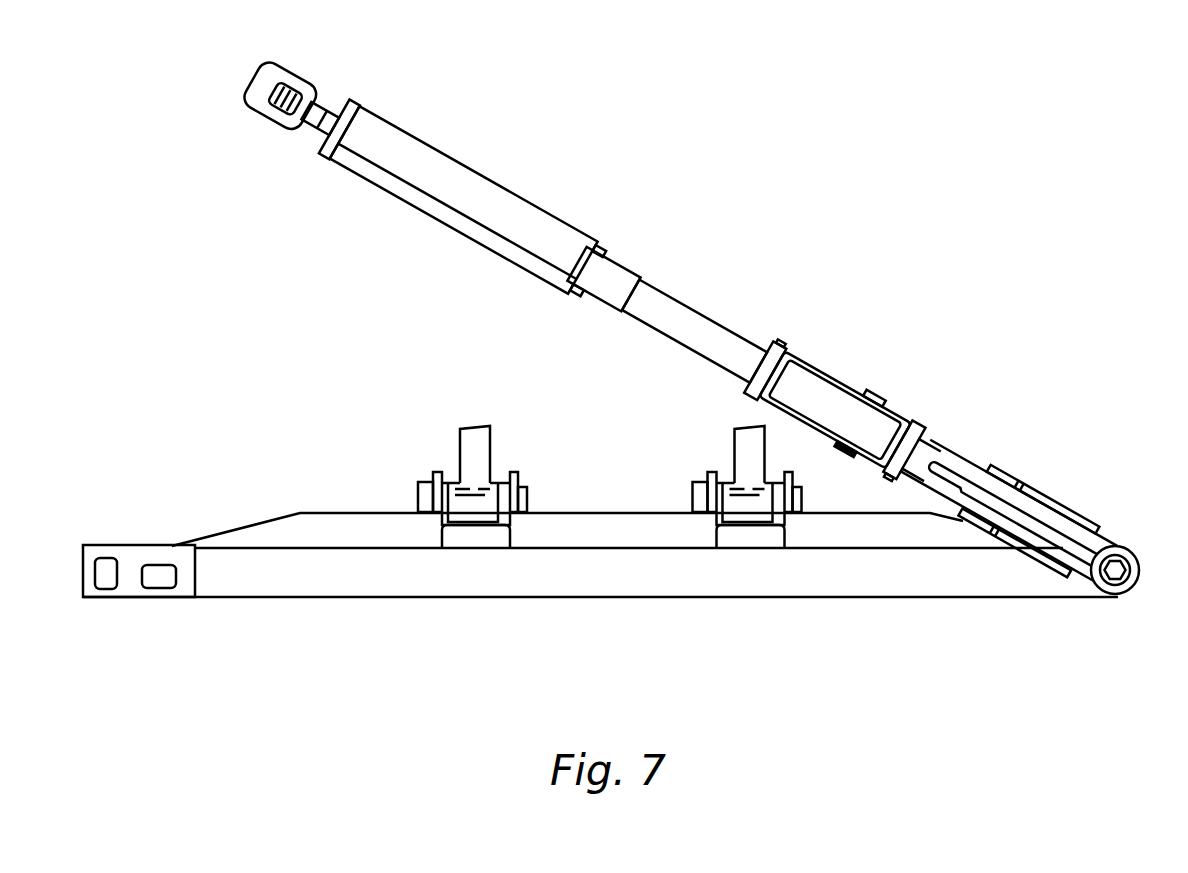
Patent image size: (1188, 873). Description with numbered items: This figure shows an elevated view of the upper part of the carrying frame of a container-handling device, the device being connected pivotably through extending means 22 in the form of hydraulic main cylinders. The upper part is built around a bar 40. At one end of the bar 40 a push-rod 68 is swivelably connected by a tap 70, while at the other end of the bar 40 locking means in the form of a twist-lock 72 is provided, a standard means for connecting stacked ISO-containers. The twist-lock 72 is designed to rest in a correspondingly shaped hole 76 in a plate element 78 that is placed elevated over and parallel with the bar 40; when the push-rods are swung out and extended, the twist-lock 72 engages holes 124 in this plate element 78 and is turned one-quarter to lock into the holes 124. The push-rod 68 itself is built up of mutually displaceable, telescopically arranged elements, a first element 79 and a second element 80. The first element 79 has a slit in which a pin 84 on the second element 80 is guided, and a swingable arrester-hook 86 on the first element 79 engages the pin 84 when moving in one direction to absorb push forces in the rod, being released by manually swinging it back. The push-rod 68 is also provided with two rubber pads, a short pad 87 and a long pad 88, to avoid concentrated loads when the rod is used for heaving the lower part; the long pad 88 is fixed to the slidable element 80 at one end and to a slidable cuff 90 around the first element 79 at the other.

The extending means 22 is at (740, 448).
The bar 40 is at (833, 578).
The push-rod 68 is at (709, 310).
The tap 70 is at (1124, 553).
The twist-lock 72 is at (265, 108).
The hole 76 is at (160, 580).
The plate element 78 is at (135, 557).
The first element 79 is at (932, 453).
The element 80 is at (325, 112).
The pin 84 is at (878, 390).
The arrester-hook 86 is at (817, 373).
The short rubber pad 87 is at (1037, 488).
The long rubber pad 88 is at (460, 170).
The slidable cuff 90 is at (607, 277).
The holes 124 is at (105, 582).